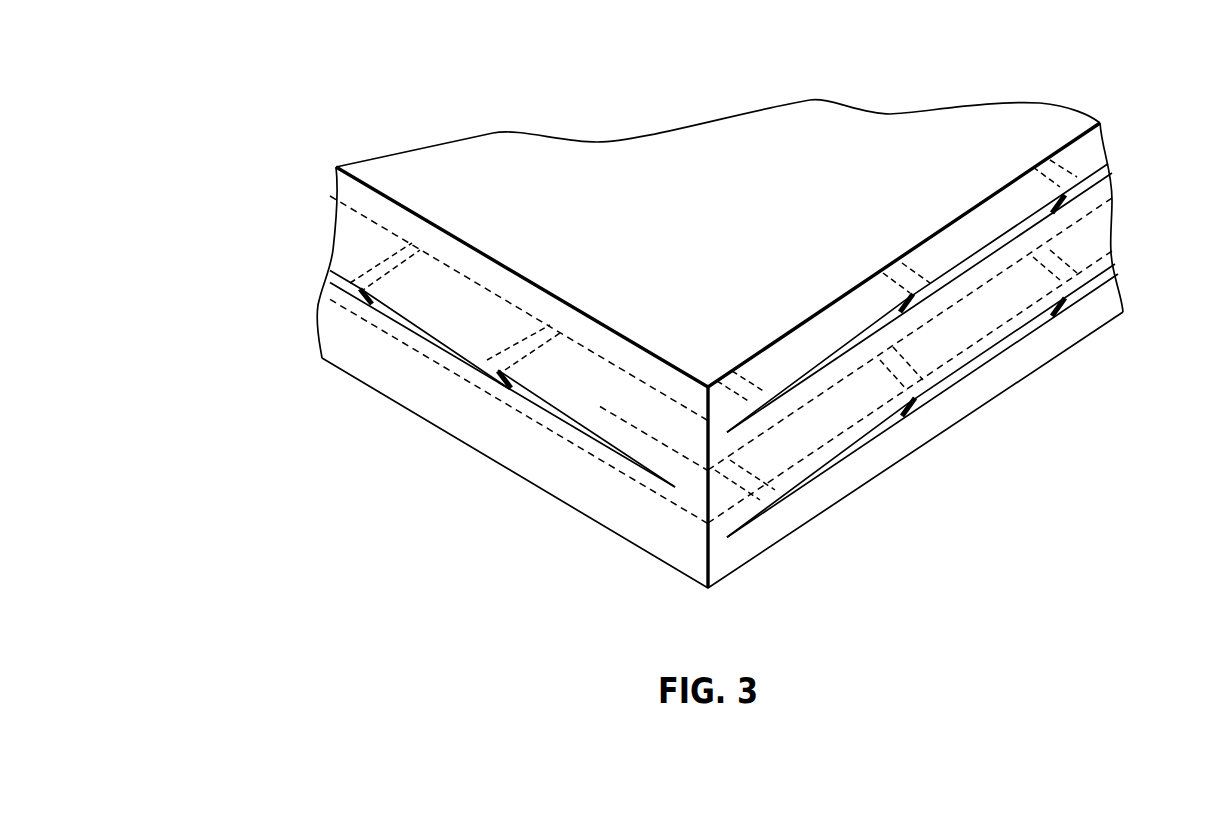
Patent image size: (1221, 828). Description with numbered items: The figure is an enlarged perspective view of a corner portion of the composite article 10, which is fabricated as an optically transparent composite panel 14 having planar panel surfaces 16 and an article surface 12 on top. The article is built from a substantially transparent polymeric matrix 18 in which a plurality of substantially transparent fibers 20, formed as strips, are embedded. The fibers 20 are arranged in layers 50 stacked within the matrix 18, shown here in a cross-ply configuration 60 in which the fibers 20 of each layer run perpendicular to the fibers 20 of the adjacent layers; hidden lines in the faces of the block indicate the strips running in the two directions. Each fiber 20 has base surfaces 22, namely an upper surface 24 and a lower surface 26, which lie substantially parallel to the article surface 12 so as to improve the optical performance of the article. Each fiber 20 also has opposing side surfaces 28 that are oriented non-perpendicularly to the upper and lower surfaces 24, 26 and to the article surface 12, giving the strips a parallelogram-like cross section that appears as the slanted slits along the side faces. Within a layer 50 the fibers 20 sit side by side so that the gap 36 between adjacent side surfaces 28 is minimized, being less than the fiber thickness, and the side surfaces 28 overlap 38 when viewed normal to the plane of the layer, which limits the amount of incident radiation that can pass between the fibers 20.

The composite article 10 is at (492, 143).
The article surface 12 is at (660, 150).
The composite panel 14 is at (840, 102).
The panel surfaces 16 is at (942, 130).
The matrix 18 is at (430, 405).
The fibers 20 is at (1090, 257).
The base surfaces 22 is at (950, 349).
The upper surface 24 is at (947, 390).
The lower surface 26 is at (1055, 345).
The side surfaces 28 is at (1017, 313).
The gap 36 is at (1062, 178).
The overlap 38 is at (920, 412).
The layers 50 is at (333, 267).
The cross-ply configuration 60 is at (330, 287).